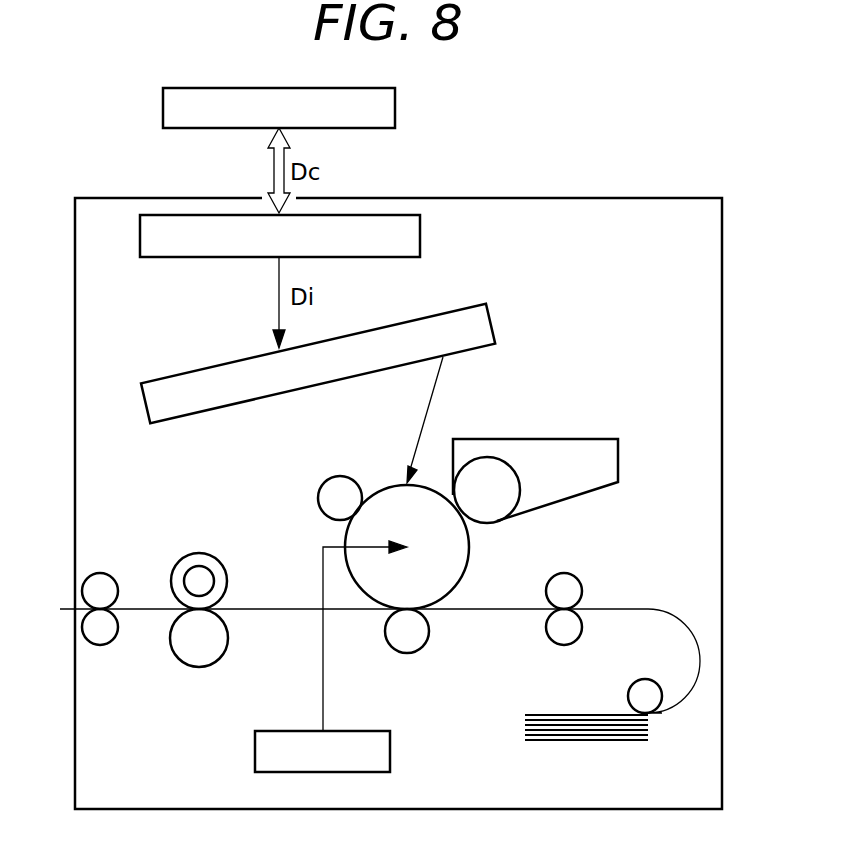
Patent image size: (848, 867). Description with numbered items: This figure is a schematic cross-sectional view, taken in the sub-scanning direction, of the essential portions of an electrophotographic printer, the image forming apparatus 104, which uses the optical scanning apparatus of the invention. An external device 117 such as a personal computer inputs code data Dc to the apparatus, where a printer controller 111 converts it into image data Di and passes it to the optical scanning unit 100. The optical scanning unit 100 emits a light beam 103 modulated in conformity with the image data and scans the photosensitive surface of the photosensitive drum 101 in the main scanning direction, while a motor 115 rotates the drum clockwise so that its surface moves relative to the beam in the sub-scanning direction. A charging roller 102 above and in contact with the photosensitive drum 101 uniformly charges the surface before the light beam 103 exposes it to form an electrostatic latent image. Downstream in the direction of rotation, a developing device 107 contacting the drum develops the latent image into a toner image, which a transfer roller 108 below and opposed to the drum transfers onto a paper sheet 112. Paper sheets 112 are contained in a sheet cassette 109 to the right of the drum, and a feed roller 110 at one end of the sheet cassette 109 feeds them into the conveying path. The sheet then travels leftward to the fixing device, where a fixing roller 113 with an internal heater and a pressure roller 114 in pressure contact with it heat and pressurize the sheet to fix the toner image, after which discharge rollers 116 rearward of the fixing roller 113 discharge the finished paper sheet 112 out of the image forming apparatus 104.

The optical scanning unit 100 is at (185, 364).
The photosensitive drum 101 is at (466, 565).
The charging roller 102 is at (333, 480).
The light beam 103 is at (432, 395).
The image forming apparatus 104 is at (537, 198).
The developing device 107 is at (560, 440).
The transfer roller 108 is at (421, 645).
The sheet cassette 109 is at (583, 742).
The feed roller 110 is at (645, 683).
The printer controller 111 is at (421, 236).
The paper sheet 112 is at (294, 608).
The fixing roller 113 is at (210, 560).
The pressure roller 114 is at (199, 665).
The motor 115 is at (355, 731).
The discharge rollers 116 is at (105, 580).
The external device 117 is at (396, 98).